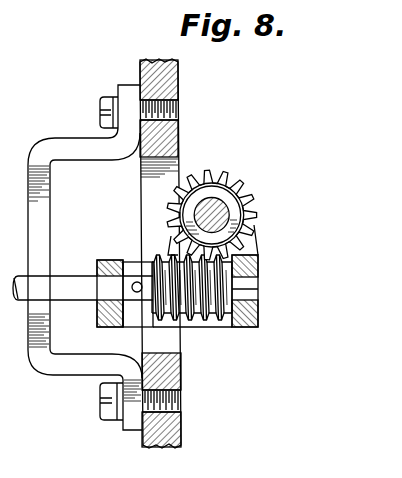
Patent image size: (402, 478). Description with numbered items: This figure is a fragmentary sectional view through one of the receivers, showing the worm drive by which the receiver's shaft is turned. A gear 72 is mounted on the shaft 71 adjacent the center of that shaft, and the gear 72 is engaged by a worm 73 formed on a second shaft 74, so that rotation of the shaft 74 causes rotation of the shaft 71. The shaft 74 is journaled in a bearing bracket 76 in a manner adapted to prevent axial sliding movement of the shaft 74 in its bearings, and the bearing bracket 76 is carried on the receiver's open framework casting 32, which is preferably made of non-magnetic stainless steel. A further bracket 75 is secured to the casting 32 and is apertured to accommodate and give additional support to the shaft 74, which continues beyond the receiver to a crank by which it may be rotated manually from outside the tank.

The framework casting 32 is at (172, 430).
The shaft 71 is at (230, 213).
The gear 72 is at (221, 172).
The worm 73 is at (206, 315).
The shaft 74 is at (77, 281).
The bracket 75 is at (28, 323).
The bearing bracket 76 is at (258, 319).